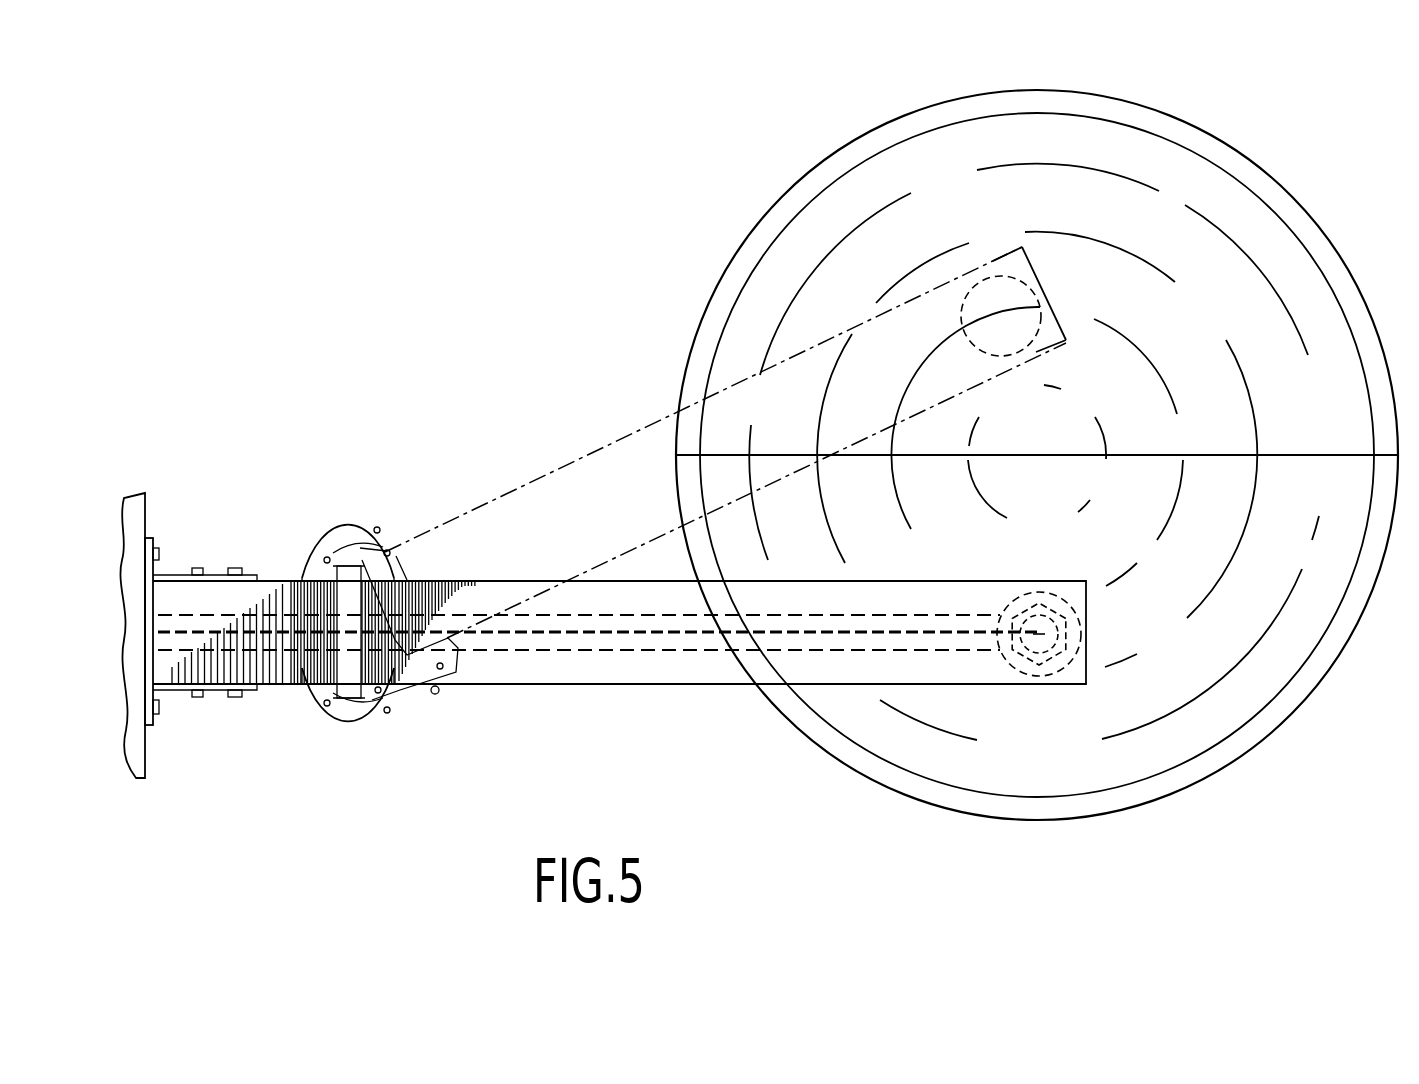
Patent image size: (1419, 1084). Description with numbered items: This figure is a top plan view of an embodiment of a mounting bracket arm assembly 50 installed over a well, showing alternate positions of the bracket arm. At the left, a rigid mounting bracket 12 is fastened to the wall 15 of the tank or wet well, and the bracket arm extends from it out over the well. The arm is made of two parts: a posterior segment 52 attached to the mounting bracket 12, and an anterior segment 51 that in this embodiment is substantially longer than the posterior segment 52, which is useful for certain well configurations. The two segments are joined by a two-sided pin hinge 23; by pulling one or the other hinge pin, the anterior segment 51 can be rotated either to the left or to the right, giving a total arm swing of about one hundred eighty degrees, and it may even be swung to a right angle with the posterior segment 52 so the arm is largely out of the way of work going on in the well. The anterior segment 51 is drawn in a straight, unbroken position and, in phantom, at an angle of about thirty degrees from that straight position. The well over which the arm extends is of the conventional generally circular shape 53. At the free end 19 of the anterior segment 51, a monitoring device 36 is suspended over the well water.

The wall 15 is at (137, 512).
The mounting bracket 12 is at (199, 529).
The posterior segment 52 is at (274, 600).
The pin hinge 23 is at (355, 490).
The anterior segment 51 is at (672, 710).
The bracket arm assembly 50 is at (488, 436).
The circular well 53 is at (681, 237).
The monitoring device 36 is at (1082, 632).
The free end 19 is at (1060, 677).